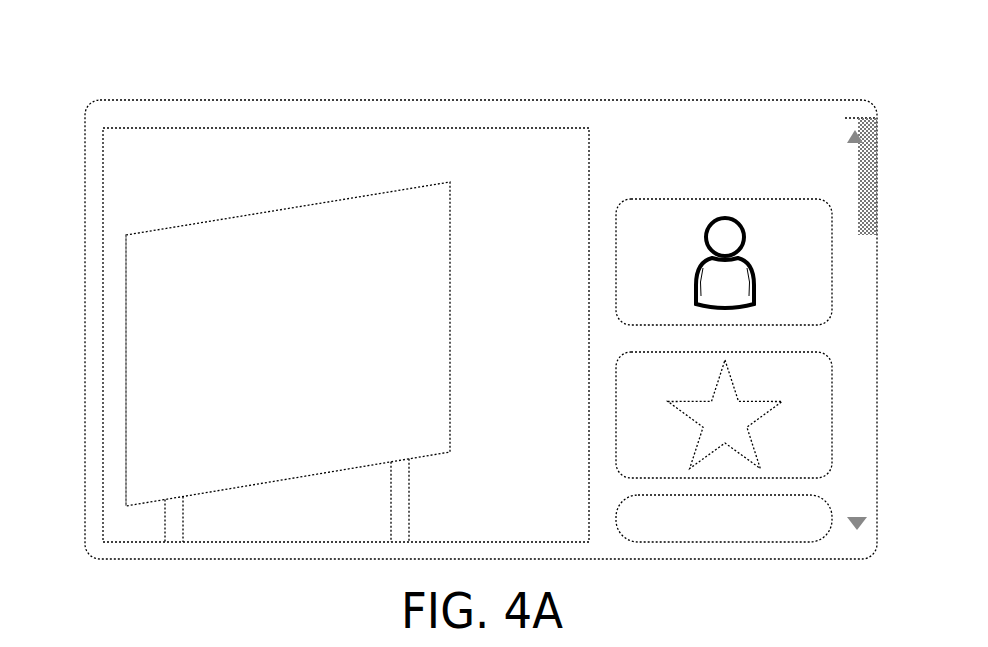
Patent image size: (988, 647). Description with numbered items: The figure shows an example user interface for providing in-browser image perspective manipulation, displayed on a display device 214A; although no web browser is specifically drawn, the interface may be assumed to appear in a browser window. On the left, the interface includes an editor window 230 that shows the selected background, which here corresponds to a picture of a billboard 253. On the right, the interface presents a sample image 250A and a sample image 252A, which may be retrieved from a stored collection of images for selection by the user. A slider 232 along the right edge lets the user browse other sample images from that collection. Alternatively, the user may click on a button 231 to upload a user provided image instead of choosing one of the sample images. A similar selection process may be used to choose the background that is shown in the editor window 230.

The display device 214A is at (772, 80).
The editor window 230 is at (156, 127).
The billboard 253 is at (126, 452).
The slider 232 is at (858, 118).
The sample image 250A is at (832, 262).
The sample image 252A is at (832, 415).
The button 231 is at (723, 542).